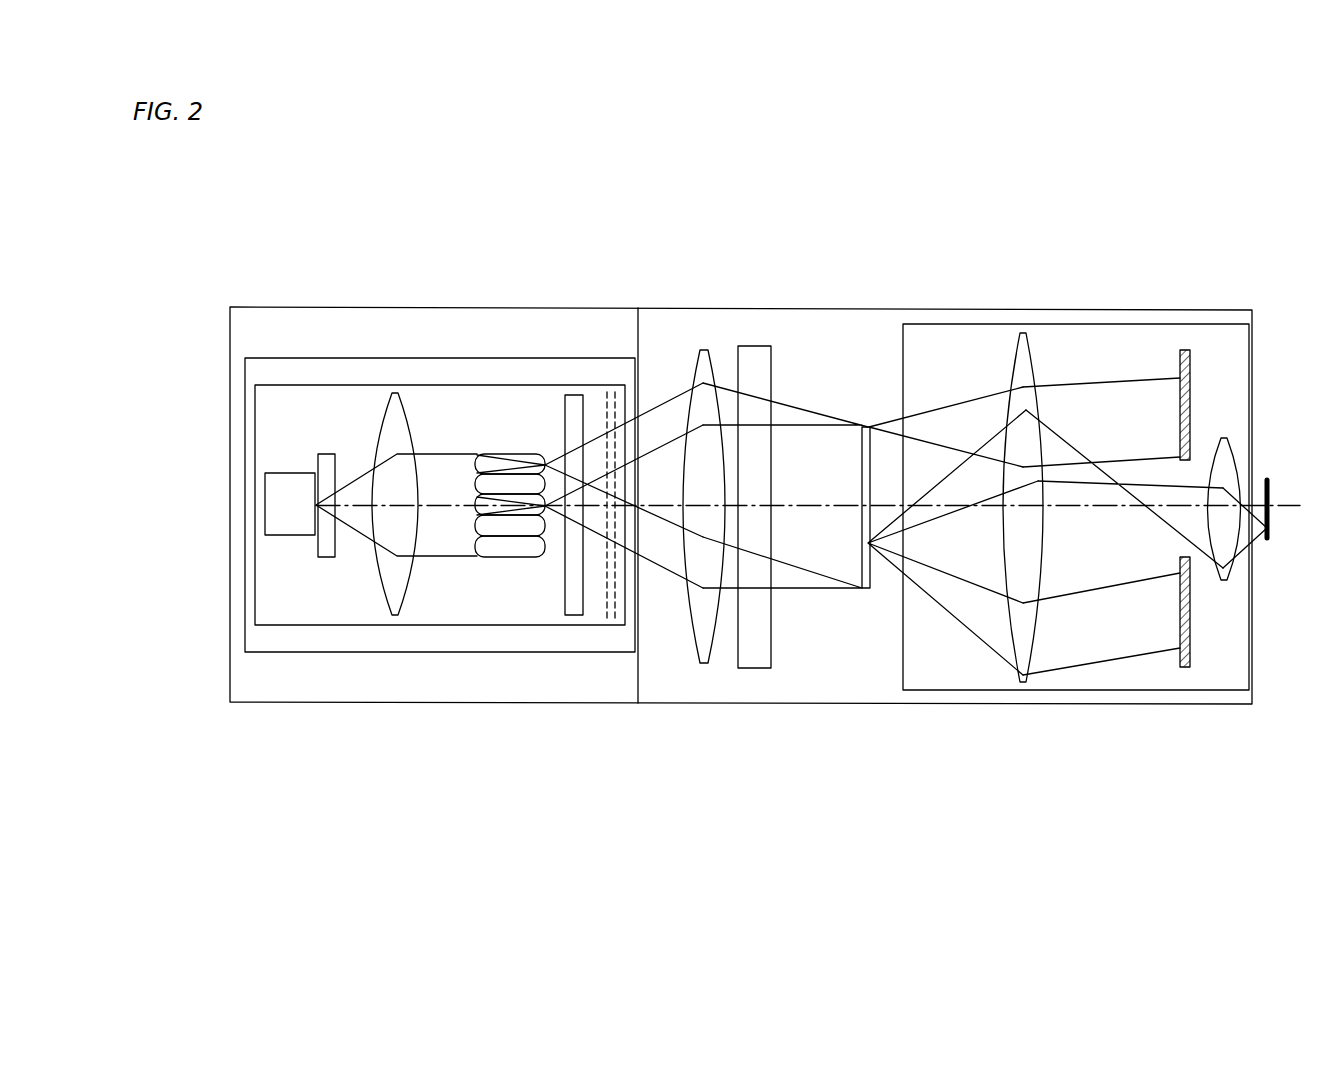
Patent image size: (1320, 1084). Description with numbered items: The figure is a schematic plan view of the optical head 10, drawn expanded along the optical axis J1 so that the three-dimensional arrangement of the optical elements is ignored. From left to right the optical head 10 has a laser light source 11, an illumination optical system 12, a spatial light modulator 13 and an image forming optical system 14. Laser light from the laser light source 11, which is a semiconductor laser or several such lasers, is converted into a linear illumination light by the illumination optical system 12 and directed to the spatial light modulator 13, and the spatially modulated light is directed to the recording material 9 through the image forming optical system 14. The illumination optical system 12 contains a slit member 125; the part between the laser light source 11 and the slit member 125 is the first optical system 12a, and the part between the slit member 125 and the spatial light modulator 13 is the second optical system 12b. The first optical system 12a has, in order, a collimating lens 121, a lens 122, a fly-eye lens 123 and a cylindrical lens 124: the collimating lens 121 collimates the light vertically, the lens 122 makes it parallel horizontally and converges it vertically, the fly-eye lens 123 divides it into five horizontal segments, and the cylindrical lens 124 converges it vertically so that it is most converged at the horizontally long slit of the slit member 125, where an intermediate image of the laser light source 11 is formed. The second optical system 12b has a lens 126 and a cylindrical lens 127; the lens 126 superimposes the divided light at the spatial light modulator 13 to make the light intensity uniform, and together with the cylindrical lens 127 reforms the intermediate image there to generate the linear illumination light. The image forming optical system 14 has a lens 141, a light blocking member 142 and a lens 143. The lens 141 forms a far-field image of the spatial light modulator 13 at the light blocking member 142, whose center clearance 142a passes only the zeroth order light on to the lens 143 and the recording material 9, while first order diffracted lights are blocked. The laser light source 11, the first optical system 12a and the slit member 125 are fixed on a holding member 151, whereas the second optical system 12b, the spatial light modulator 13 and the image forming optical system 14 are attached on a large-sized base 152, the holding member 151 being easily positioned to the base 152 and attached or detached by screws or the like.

The recording material 9 is at (1267, 480).
The optical head 10 is at (354, 189).
The laser light source 11 is at (287, 483).
The illumination optical system 12 is at (522, 337).
The first optical system 12a is at (438, 750).
The second optical system 12b is at (752, 825).
The spatial light modulator 13 is at (866, 427).
The image forming optical system 14 is at (1095, 282).
The collimating lens 121 is at (327, 557).
The lens 122 is at (395, 617).
The fly-eye lens 123 is at (500, 557).
The cylindrical lens 124 is at (573, 617).
The slit member 125 is at (612, 627).
The lens 126 is at (704, 665).
The cylindrical lens 127 is at (755, 668).
The lens 141 is at (1023, 683).
The light blocking member 142 is at (1184, 668).
The center clearance 142a is at (1170, 518).
The lens 143 is at (1224, 582).
The holding member 151 is at (245, 498).
The base 152 is at (230, 535).
The optical axis J1 is at (455, 505).